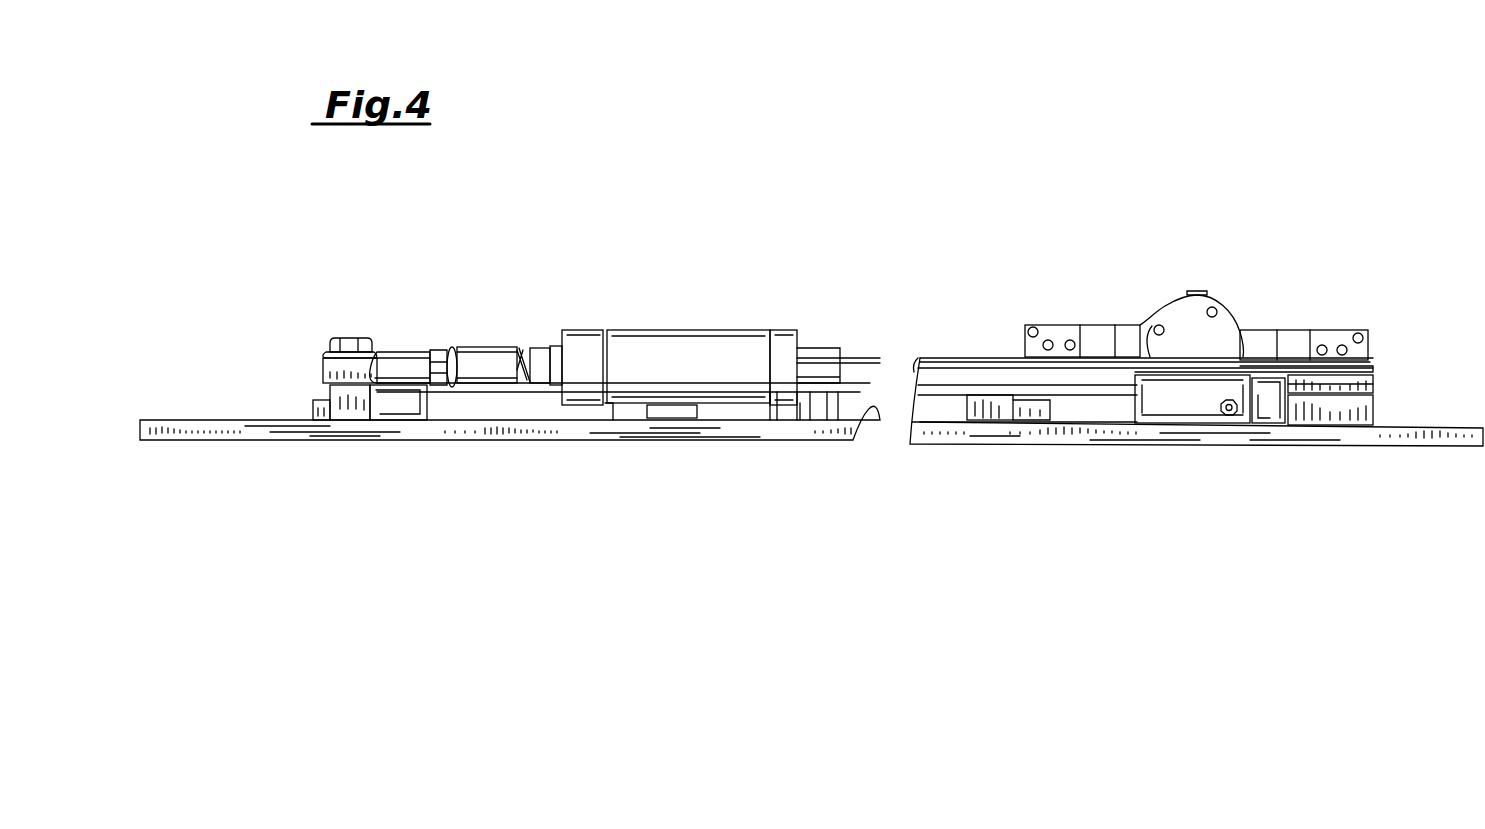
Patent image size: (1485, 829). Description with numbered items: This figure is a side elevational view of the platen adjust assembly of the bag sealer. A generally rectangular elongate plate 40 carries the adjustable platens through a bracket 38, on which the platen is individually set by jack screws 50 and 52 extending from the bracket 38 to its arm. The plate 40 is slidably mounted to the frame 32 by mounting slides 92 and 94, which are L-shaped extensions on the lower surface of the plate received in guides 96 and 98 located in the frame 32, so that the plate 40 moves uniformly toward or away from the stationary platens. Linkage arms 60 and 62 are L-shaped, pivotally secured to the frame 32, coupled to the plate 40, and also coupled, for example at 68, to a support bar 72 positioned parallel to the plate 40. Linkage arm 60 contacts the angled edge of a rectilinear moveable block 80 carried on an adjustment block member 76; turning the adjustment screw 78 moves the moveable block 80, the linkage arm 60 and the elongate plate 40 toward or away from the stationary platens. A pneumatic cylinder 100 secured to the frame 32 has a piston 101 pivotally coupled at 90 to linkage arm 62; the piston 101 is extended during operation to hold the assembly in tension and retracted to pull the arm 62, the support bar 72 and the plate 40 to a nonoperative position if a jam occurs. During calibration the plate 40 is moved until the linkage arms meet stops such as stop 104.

The frame 32 is at (255, 441).
The bracket 38 is at (1252, 335).
The elongate plate 40 is at (1318, 372).
The jack screw 50 is at (1033, 328).
The jack screw 52 is at (1360, 332).
The linkage arm 60 is at (1310, 412).
The linkage arm 62 is at (333, 407).
The coupling 68 is at (1318, 377).
The support bar 72 is at (1008, 368).
The adjustment block member 76 is at (1153, 402).
The adjustment screw 78 is at (1228, 414).
The moveable block 80 is at (1270, 407).
The pivotal coupling 90 is at (323, 343).
The mounting slide 92 is at (1003, 412).
The mounting slide 94 is at (686, 410).
The guide 96 is at (963, 410).
The guide 98 is at (628, 418).
The pneumatic cylinder 100 is at (676, 358).
The piston 101 is at (470, 372).
The stop 104 is at (308, 408).